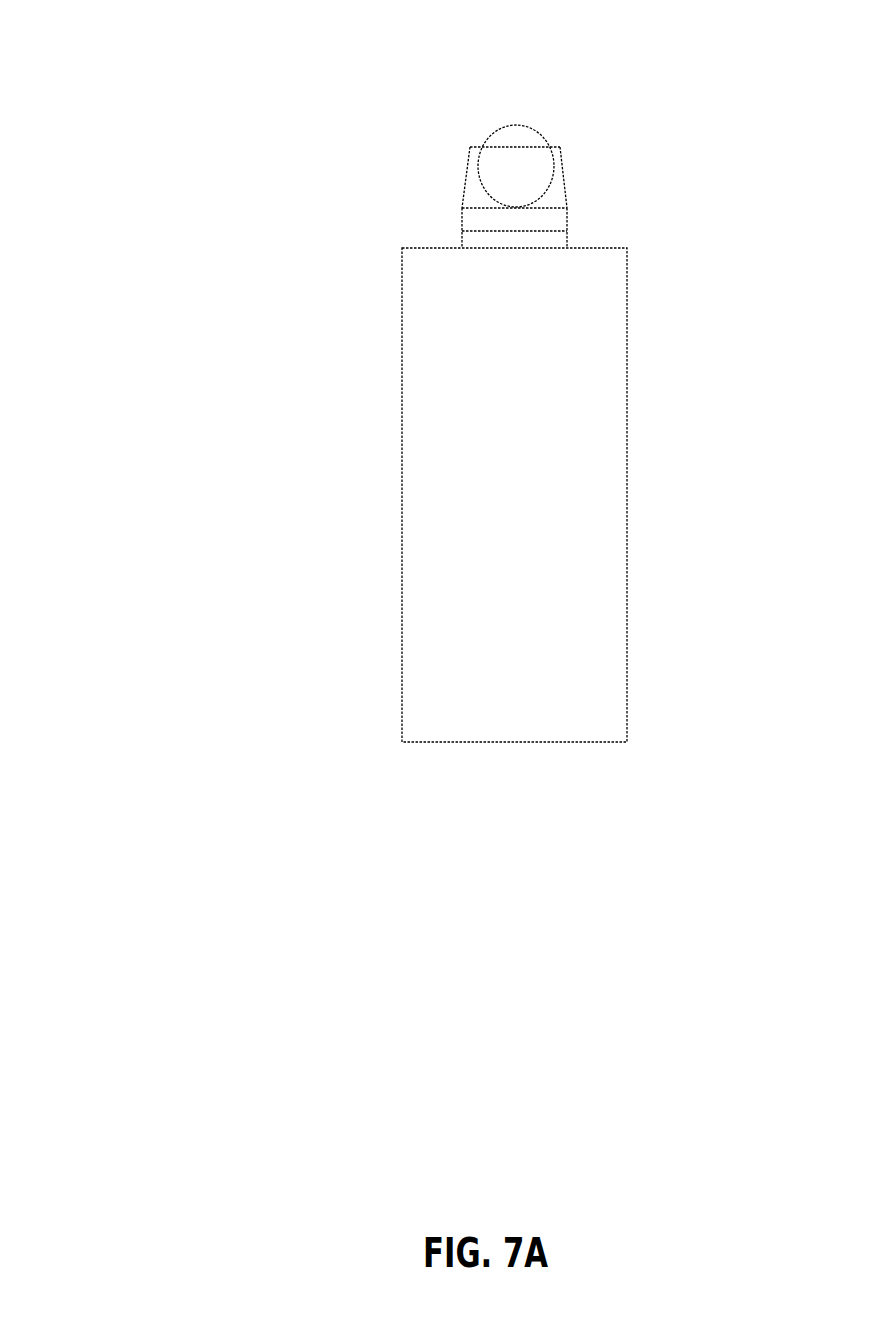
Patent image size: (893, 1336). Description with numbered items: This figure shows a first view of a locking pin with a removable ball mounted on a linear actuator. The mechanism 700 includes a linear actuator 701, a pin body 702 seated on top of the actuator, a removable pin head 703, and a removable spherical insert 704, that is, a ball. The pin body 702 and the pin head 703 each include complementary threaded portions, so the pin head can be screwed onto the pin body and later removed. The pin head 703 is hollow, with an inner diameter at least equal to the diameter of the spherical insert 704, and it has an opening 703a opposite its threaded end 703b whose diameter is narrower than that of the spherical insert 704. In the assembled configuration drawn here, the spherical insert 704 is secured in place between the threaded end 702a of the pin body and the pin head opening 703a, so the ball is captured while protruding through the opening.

The mechanism 700 is at (151, 47).
The linear actuator 701 is at (458, 587).
The pin body 702 is at (482, 242).
The threaded end of the pin body 702a is at (552, 217).
The removable pin head 703 is at (568, 215).
The opening 703a is at (478, 147).
The threaded end 703b is at (462, 215).
The removable spherical insert 704 is at (518, 133).